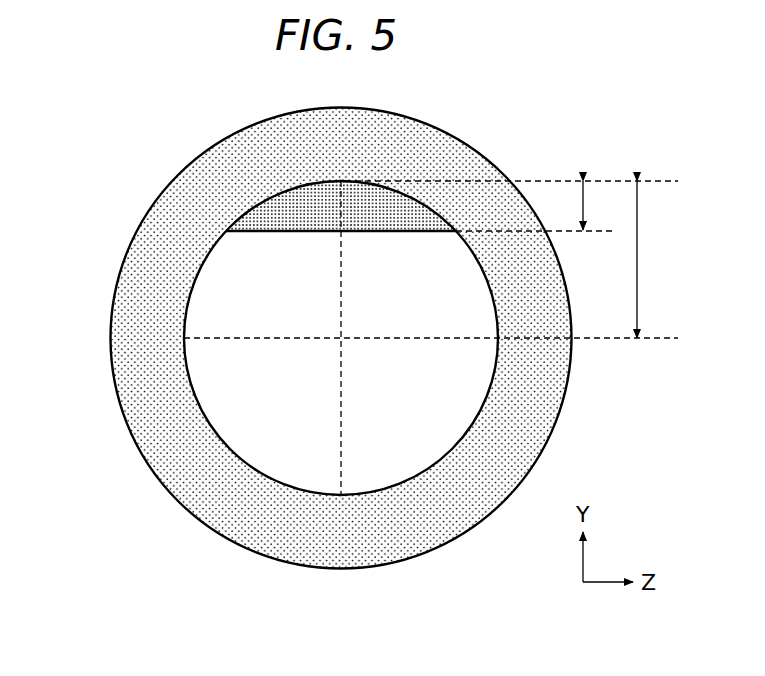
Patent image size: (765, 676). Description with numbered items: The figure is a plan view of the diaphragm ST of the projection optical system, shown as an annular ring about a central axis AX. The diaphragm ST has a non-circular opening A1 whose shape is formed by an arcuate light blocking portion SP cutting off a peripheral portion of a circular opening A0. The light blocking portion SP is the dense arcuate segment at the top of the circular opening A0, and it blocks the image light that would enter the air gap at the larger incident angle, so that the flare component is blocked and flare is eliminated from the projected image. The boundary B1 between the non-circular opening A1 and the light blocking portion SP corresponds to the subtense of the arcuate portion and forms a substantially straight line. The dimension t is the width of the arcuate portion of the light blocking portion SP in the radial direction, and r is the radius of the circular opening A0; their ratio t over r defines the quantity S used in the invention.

The light blocking portion SP is at (276, 205).
The circular opening A0 is at (200, 265).
The non-circular opening A1 is at (220, 406).
The axis AX is at (341, 338).
The boundary B1 is at (395, 232).
The diaphragm ST is at (533, 403).
The width of the arcuate portion t is at (591, 205).
The radius of the circular opening r is at (646, 259).